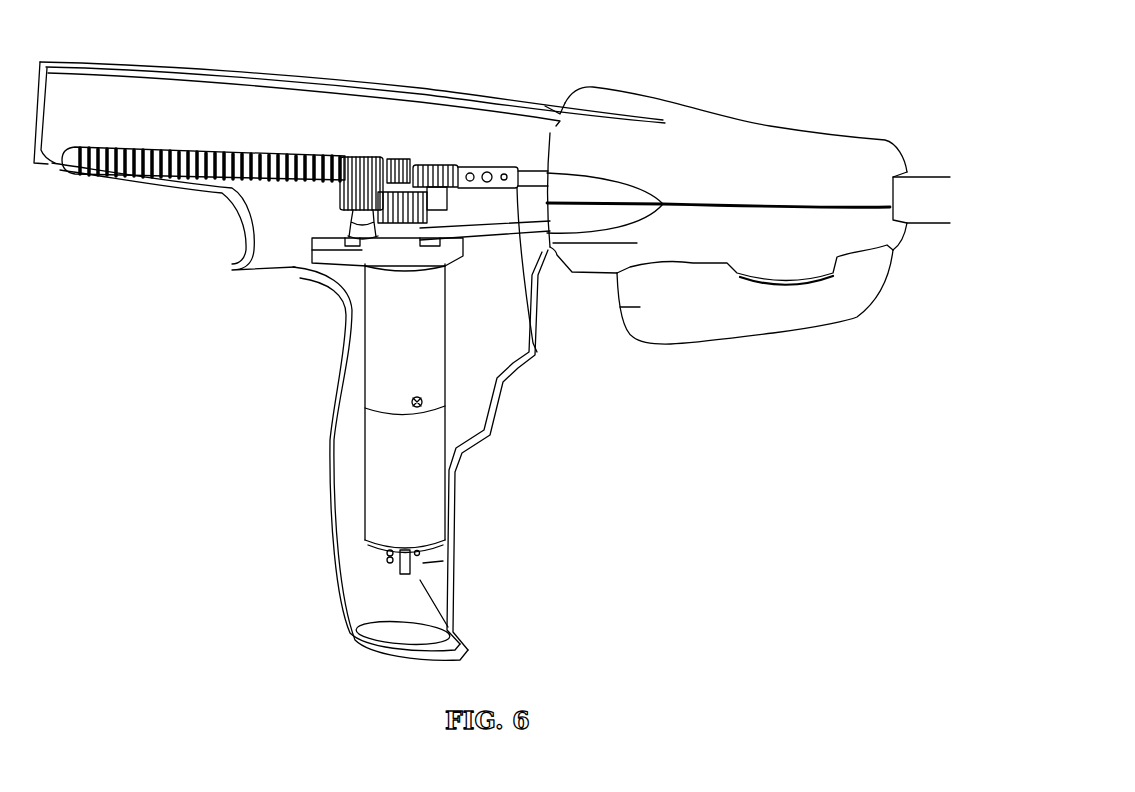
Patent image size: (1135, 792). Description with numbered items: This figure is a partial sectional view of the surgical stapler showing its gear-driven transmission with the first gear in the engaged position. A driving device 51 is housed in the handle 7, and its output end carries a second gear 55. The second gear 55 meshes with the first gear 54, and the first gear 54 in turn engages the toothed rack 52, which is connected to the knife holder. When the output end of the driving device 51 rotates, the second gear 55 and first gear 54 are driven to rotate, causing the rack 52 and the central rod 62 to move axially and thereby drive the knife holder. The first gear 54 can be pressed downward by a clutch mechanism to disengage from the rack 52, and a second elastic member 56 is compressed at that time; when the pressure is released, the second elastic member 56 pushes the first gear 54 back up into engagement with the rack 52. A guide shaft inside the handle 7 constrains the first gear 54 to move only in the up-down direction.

The rack 52 is at (190, 150).
The first gear 54 is at (340, 197).
The second elastic member 56 is at (353, 223).
The second gear 55 is at (377, 258).
The driving device 51 is at (418, 485).
The handle 7 is at (333, 538).
The central rod 62 is at (533, 343).